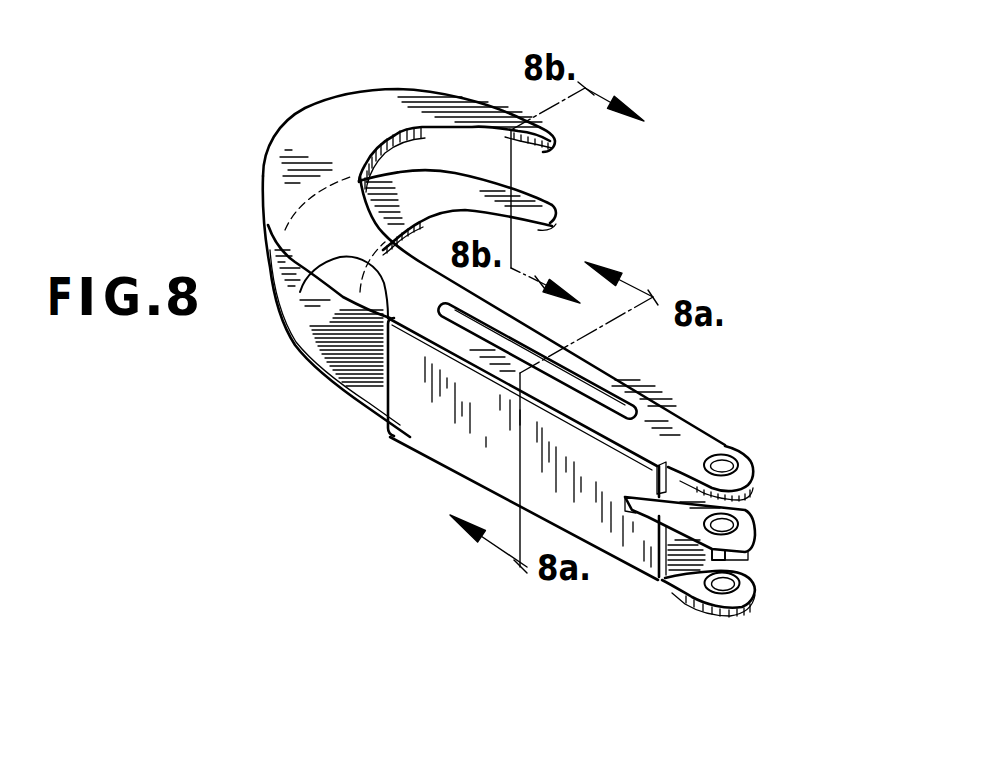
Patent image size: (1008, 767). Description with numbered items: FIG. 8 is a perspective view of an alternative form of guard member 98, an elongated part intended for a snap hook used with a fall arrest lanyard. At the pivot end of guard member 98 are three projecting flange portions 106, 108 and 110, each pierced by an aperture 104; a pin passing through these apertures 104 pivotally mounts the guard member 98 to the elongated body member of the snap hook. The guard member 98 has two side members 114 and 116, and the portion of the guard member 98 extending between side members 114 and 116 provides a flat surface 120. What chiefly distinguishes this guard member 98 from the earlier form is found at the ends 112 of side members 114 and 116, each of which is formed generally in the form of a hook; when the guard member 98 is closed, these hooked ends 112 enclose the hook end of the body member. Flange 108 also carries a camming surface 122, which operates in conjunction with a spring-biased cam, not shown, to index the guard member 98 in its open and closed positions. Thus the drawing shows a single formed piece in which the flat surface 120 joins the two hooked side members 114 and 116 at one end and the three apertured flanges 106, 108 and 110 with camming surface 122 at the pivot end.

The guard member 98 is at (705, 390).
The apertures 104 is at (723, 457).
The projecting flange portion 106 is at (724, 446).
The projecting flange portion 108 is at (728, 516).
The projecting flange portion 110 is at (707, 572).
The ends 112 is at (398, 205).
The side member 114 is at (300, 292).
The side member 116 is at (360, 366).
The flat surface 120 is at (447, 437).
The camming surface 122 is at (728, 556).